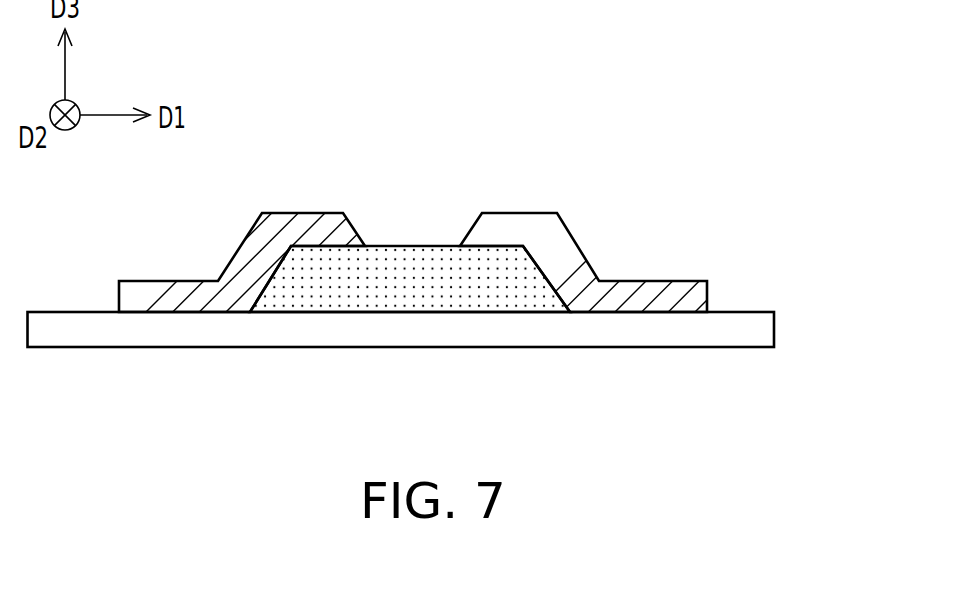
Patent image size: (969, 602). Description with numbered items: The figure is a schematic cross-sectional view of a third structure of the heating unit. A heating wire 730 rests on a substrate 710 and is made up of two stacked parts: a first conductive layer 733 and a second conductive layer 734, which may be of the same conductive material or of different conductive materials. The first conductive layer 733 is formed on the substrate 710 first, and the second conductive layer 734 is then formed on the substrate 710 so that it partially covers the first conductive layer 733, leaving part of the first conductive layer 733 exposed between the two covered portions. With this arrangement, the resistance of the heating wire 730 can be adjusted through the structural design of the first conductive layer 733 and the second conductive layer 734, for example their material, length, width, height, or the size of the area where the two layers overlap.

The substrate 710 is at (765, 328).
The heating wire 730 is at (467, 233).
The first conductive layer 733 is at (535, 286).
The second conductive layer 734 is at (547, 235).